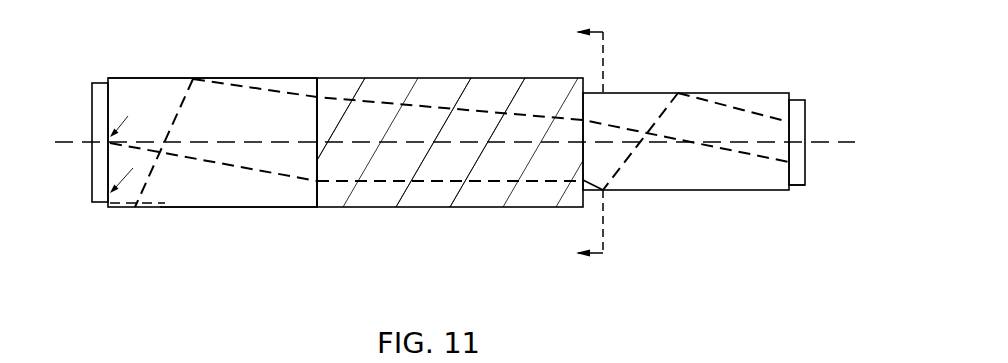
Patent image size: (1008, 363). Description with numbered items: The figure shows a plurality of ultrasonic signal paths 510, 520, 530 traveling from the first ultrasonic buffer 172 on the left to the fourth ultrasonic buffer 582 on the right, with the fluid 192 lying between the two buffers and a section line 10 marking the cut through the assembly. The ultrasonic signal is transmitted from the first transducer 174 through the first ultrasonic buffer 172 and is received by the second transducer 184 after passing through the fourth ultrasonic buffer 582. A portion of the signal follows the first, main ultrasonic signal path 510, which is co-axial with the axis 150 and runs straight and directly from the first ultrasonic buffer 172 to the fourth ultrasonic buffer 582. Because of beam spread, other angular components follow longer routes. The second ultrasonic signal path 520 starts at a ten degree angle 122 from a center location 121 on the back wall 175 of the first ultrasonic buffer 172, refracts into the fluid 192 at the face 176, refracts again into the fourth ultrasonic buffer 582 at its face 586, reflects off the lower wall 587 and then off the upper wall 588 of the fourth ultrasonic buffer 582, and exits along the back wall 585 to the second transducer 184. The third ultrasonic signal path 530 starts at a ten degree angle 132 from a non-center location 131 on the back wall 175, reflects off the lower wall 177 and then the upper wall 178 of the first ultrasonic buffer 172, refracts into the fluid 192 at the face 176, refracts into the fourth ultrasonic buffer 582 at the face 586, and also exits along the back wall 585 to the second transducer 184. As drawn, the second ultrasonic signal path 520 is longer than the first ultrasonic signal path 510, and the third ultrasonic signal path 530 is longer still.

The section line 10 is at (578, 144).
The center location 121 is at (128, 116).
The angle 122 is at (221, 160).
The non-center location 131 is at (130, 173).
The angle 132 is at (160, 205).
The axis 150 is at (847, 136).
The first ultrasonic buffer 172 is at (267, 190).
The first transducer 174 is at (92, 120).
The back wall 175 is at (98, 78).
The face 176 is at (318, 200).
The lower wall 177 is at (232, 208).
The upper wall 178 is at (228, 78).
The second transducer 184 is at (800, 186).
The fluid 192 is at (328, 115).
The first ultrasonic signal path 510 is at (370, 130).
The second ultrasonic signal path 520 is at (434, 188).
The third ultrasonic signal path 530 is at (465, 118).
The fourth ultrasonic buffer 582 is at (752, 180).
The back wall 585 is at (800, 99).
The face 586 is at (560, 181).
The lower wall 587 is at (634, 192).
The upper wall 588 is at (710, 93).